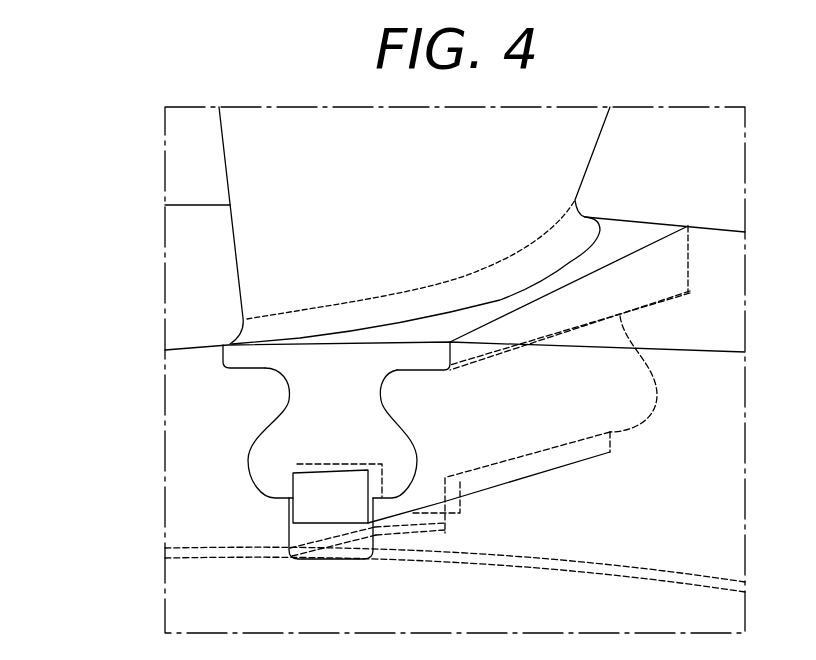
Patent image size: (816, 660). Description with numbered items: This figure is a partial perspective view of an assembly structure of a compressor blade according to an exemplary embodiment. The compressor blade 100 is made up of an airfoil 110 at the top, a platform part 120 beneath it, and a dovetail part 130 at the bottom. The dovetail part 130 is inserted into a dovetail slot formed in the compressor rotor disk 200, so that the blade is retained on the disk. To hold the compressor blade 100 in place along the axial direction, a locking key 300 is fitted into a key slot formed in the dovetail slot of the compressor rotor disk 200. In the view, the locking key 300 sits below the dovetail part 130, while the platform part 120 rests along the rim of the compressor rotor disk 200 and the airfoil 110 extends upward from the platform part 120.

The compressor blade 100 is at (313, 302).
The airfoil 110 is at (300, 281).
The platform part 120 is at (258, 358).
The dovetail part 130 is at (293, 438).
The compressor rotor disk 200 is at (688, 487).
The locking key 300 is at (315, 510).